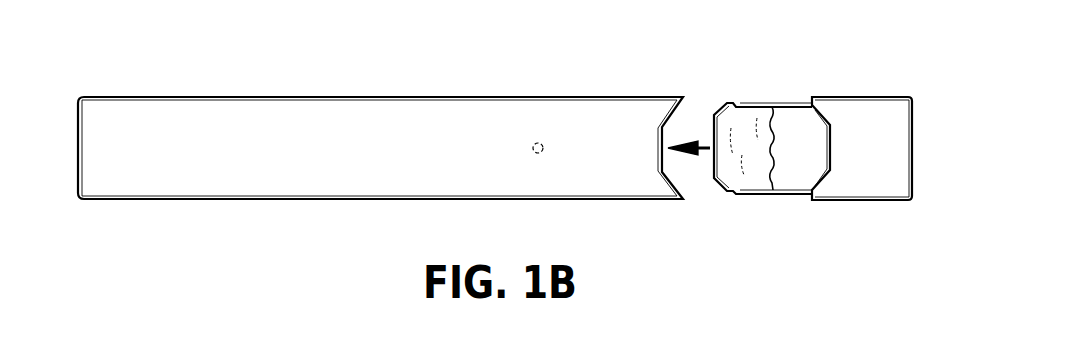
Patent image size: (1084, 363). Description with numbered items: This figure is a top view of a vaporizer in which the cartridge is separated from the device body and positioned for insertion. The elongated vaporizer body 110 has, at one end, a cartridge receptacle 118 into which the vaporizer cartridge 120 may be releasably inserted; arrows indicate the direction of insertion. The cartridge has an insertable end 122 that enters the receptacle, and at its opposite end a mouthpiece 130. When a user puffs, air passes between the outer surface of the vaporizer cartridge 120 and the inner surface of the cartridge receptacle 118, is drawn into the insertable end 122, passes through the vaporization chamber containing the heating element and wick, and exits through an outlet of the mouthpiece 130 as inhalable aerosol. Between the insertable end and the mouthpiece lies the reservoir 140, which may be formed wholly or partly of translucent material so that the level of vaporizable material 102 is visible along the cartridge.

The vaporizer body 110 is at (207, 118).
The cartridge receptacle 118 is at (698, 106).
The vaporizer cartridge 120 is at (813, 142).
The insertable end 122 is at (704, 192).
The vaporizable material 102 is at (752, 180).
The reservoir 140 is at (788, 173).
The mouthpiece 130 is at (875, 158).